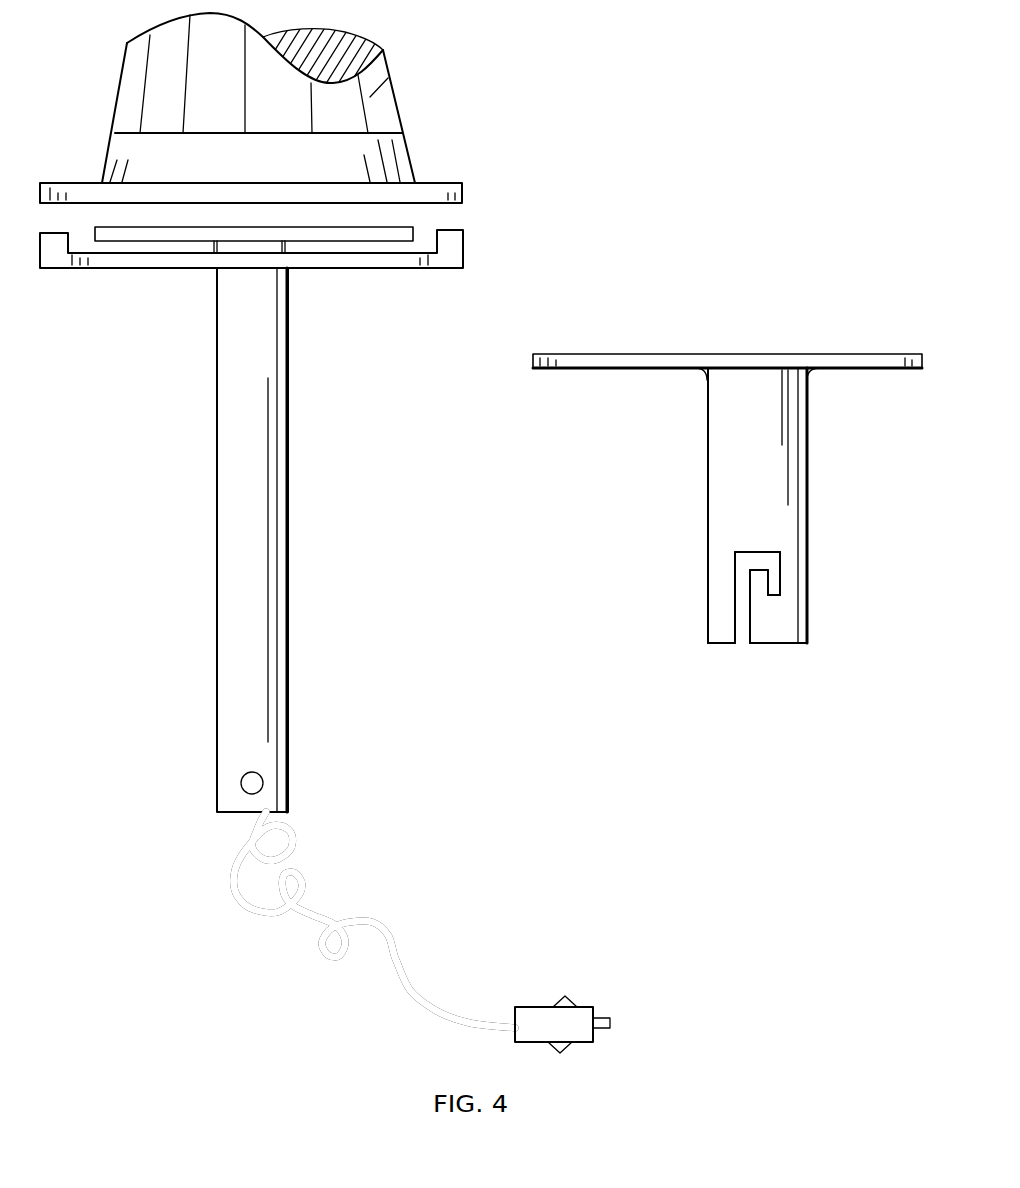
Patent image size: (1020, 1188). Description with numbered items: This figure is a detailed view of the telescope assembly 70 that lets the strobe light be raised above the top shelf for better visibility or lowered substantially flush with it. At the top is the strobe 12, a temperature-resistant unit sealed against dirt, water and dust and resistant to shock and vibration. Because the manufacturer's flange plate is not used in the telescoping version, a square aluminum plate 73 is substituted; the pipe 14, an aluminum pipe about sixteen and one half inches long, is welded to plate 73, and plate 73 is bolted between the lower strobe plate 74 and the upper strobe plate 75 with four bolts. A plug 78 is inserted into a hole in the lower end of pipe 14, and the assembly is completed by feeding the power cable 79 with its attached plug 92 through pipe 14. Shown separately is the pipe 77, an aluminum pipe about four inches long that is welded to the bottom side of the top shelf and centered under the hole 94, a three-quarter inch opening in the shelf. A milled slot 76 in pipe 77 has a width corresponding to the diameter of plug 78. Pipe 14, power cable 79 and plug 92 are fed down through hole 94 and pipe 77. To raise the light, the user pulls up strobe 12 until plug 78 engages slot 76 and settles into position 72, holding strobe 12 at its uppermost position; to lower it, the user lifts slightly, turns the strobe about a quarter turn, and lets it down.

The strobe 12 is at (392, 71).
The pipe 14 is at (255, 410).
The telescope assembly 70 is at (690, 205).
The position 72 is at (774, 592).
The plate 73 is at (416, 232).
The lower strobe plate 74 is at (348, 266).
The upper strobe plate 75 is at (460, 185).
The milled slot 76 is at (742, 628).
The pipe 77 is at (808, 462).
The plug 78 is at (257, 783).
The power cable 79 is at (398, 937).
The plug 92 is at (520, 1003).
The hole 94 is at (758, 352).